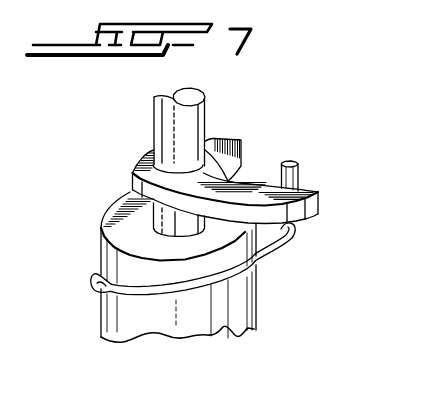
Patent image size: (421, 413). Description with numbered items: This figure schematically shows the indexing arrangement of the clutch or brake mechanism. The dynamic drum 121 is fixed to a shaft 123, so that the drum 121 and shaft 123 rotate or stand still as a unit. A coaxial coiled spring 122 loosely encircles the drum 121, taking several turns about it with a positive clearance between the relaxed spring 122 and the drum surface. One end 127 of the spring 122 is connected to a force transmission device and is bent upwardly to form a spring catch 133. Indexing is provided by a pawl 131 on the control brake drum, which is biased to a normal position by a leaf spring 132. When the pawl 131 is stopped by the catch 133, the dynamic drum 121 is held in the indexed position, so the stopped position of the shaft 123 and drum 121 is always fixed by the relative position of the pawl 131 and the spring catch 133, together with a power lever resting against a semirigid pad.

The dynamic drum 121 is at (171, 312).
The coiled spring 122 is at (93, 274).
The shaft 123 is at (205, 112).
The end of the spring 127 is at (277, 257).
The pawl 131 is at (318, 218).
The leaf spring 132 is at (243, 150).
The spring catch 133 is at (299, 173).